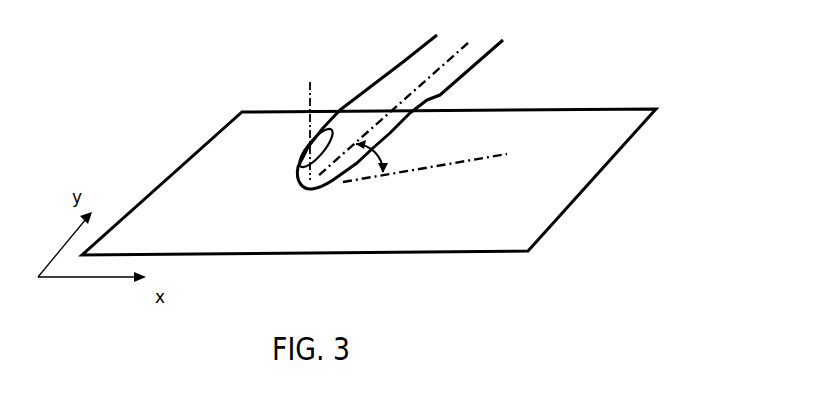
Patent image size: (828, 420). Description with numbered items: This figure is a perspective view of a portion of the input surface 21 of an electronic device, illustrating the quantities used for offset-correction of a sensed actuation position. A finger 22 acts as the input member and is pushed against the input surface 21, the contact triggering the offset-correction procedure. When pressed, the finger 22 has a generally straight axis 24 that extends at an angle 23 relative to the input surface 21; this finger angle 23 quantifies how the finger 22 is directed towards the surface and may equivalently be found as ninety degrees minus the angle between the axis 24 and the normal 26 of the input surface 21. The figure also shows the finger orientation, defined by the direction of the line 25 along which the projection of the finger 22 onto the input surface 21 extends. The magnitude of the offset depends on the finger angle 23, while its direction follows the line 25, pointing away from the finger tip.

The input surface 21 is at (373, 158).
The finger 22 is at (398, 112).
The finger angle 23 is at (404, 149).
The axis 24 is at (393, 100).
The line 25 is at (425, 192).
The normal 26 is at (277, 117).